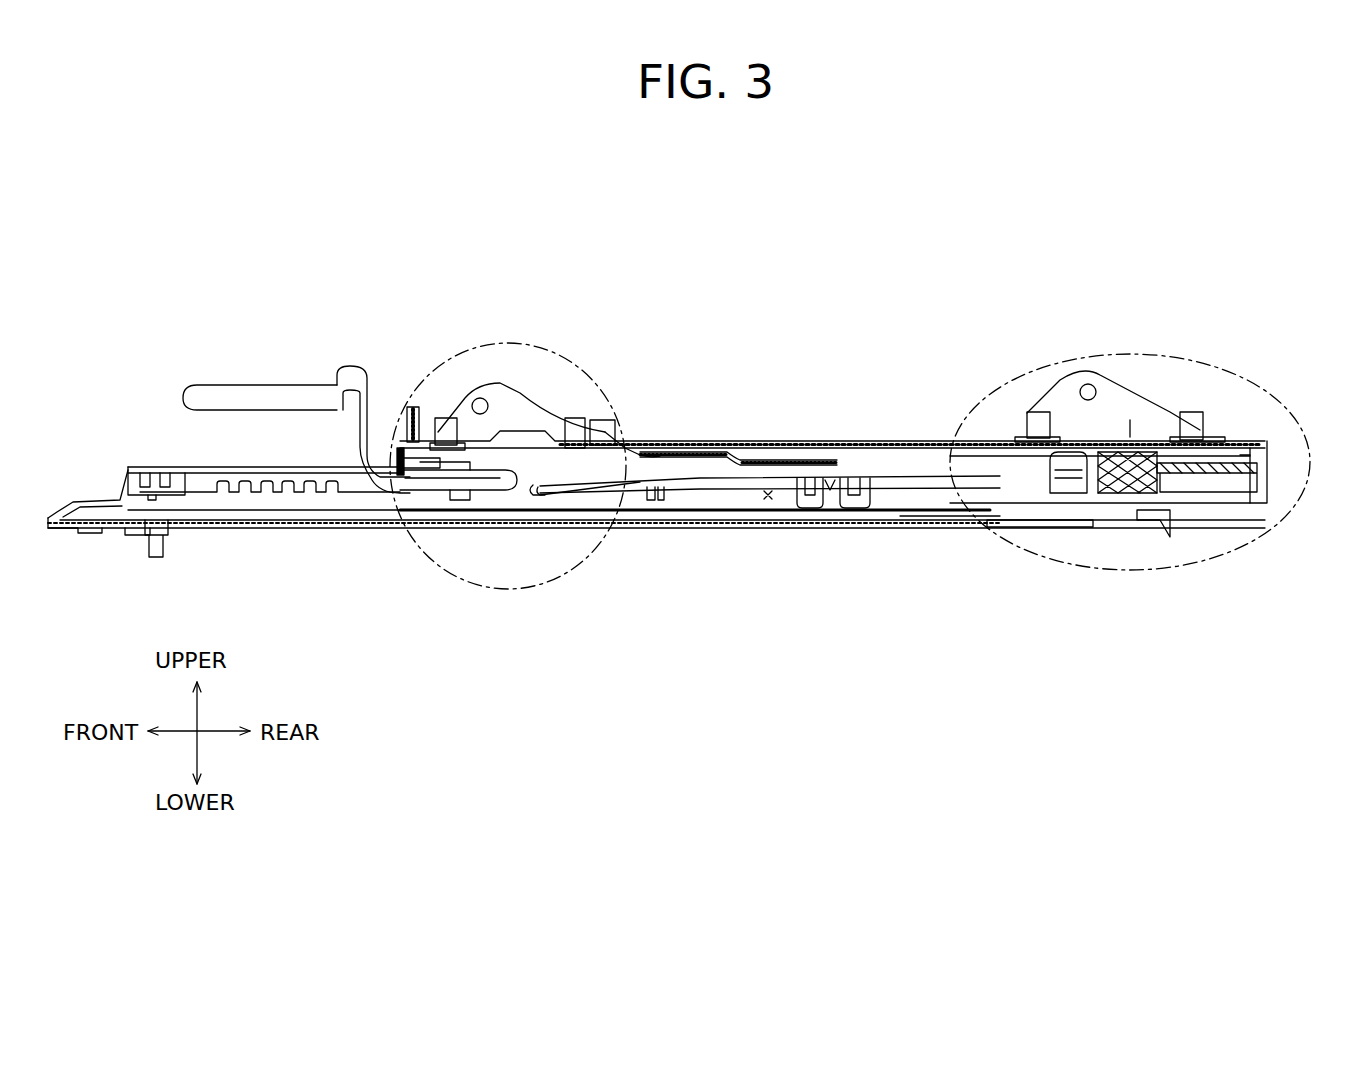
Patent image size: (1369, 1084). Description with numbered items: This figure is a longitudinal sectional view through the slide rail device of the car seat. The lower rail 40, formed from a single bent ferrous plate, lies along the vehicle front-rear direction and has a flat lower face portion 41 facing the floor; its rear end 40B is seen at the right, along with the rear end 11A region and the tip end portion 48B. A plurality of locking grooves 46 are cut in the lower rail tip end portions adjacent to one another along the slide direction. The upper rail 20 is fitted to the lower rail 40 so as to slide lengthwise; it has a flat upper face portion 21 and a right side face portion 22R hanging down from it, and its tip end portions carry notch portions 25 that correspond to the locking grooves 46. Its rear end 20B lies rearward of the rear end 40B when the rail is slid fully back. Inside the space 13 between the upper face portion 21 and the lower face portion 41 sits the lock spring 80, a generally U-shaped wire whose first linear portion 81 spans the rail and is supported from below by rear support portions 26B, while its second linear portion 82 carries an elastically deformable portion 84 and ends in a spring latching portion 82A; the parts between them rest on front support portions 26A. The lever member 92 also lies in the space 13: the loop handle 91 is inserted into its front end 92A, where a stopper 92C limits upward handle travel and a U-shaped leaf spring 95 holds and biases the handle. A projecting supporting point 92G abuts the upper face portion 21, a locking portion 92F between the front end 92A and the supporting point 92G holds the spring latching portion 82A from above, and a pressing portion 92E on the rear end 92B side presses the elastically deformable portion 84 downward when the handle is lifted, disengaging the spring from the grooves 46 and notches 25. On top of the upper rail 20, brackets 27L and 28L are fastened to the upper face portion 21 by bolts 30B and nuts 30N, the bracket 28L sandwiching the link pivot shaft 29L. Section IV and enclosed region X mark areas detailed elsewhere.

The rear end portion 11A is at (1241, 390).
The space 13 is at (768, 500).
The upper rail 20 is at (898, 460).
The rear end of the upper rail 20B is at (1290, 440).
The upper face portion 21 is at (923, 442).
The right side face portion 22R is at (918, 500).
The notch portion 25 is at (843, 515).
The front support portion 26A is at (655, 502).
The rear support portion 26B is at (1067, 493).
The bracket 27L is at (495, 384).
The bracket 28L is at (1133, 412).
The link pivot shaft 29L is at (1084, 368).
The bolt 30B is at (458, 415).
The nut 30N is at (440, 412).
The lower rail 40 is at (118, 500).
The rear end of the lower rail 40B is at (1170, 510).
The lower face portion 41 is at (863, 512).
The locking groove 46 is at (270, 493).
The guide portion 48B is at (695, 512).
The lock spring 80 is at (992, 493).
The first linear portion 81 is at (1072, 483).
The second linear portion 82 is at (978, 472).
The spring latching portion 82A is at (553, 492).
The elastically deformable portion 84 is at (832, 485).
The loop handle 91 is at (222, 392).
The lever member 92 is at (707, 452).
The front end of the lever member 92A is at (398, 448).
The rear end of the lever member 92B is at (845, 478).
The stopper 92C is at (412, 405).
The pressing portion 92E is at (810, 478).
The locking portion 92F is at (537, 492).
The supporting point 92G is at (603, 427).
The leaf spring 95 is at (503, 507).
The section IV is at (555, 342).
The section X is at (1178, 356).